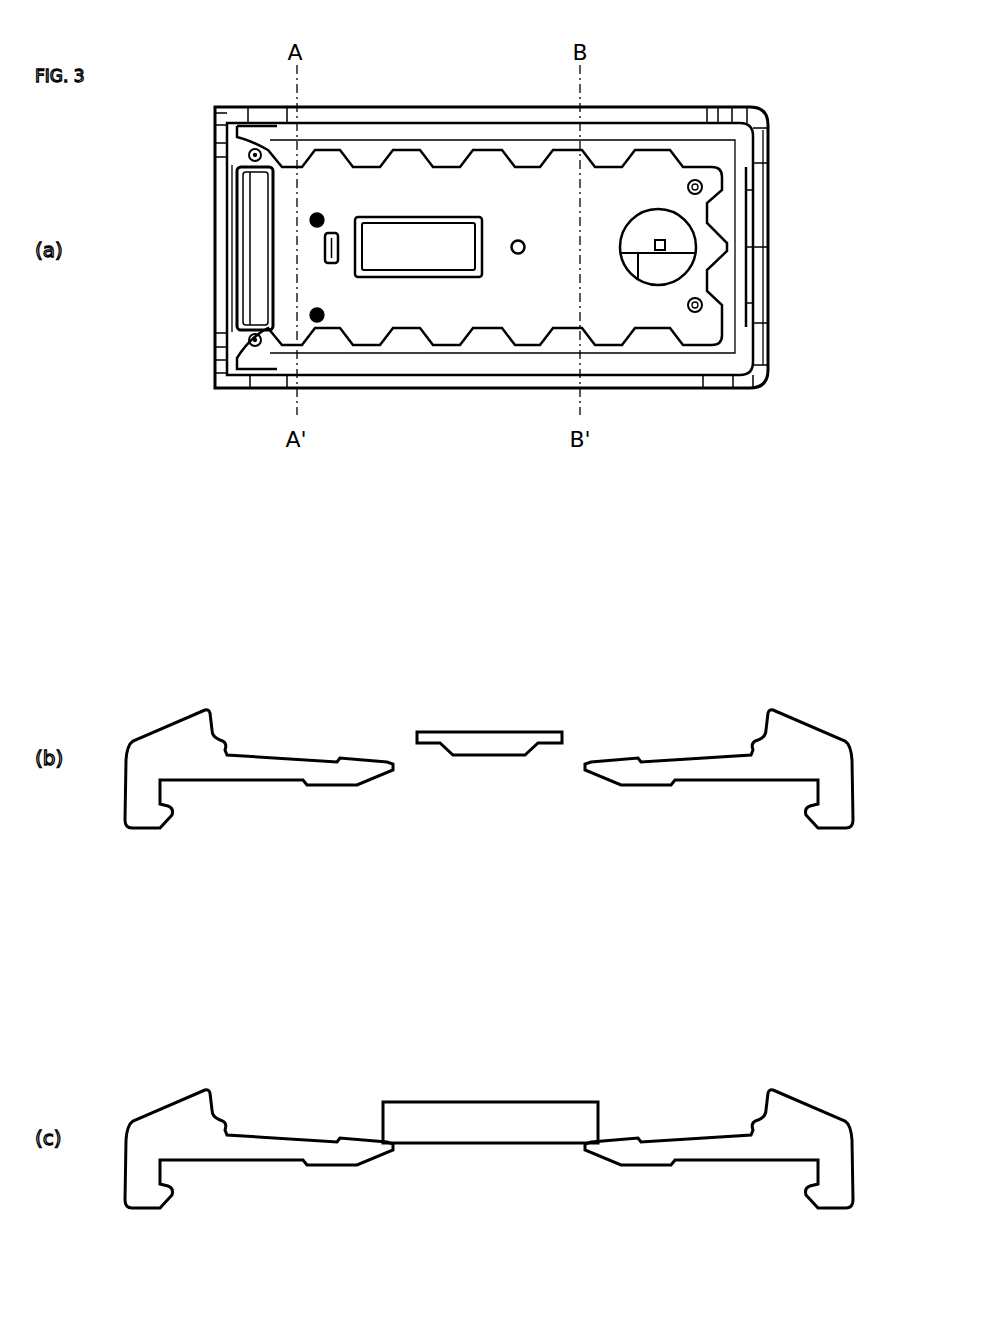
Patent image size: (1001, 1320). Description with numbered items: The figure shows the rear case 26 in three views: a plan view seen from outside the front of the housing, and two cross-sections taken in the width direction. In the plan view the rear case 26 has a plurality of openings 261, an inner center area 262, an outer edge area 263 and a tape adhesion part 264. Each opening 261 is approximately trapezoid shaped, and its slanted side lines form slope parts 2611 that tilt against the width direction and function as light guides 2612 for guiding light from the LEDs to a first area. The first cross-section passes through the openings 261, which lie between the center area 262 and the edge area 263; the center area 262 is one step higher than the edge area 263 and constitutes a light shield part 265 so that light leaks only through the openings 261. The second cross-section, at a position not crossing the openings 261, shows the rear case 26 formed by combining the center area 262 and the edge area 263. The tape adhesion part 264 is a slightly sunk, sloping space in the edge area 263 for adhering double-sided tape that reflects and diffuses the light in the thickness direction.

The rear case 26 is at (776, 343).
The openings 261 is at (489, 613).
The slope parts 2611 is at (482, 193).
The light guides 2612 is at (411, 30).
The center area 262 is at (490, 300).
The edge area 263 is at (258, 385).
The tape adhesion part 264 is at (717, 133).
The light shield part 265 is at (495, 1108).